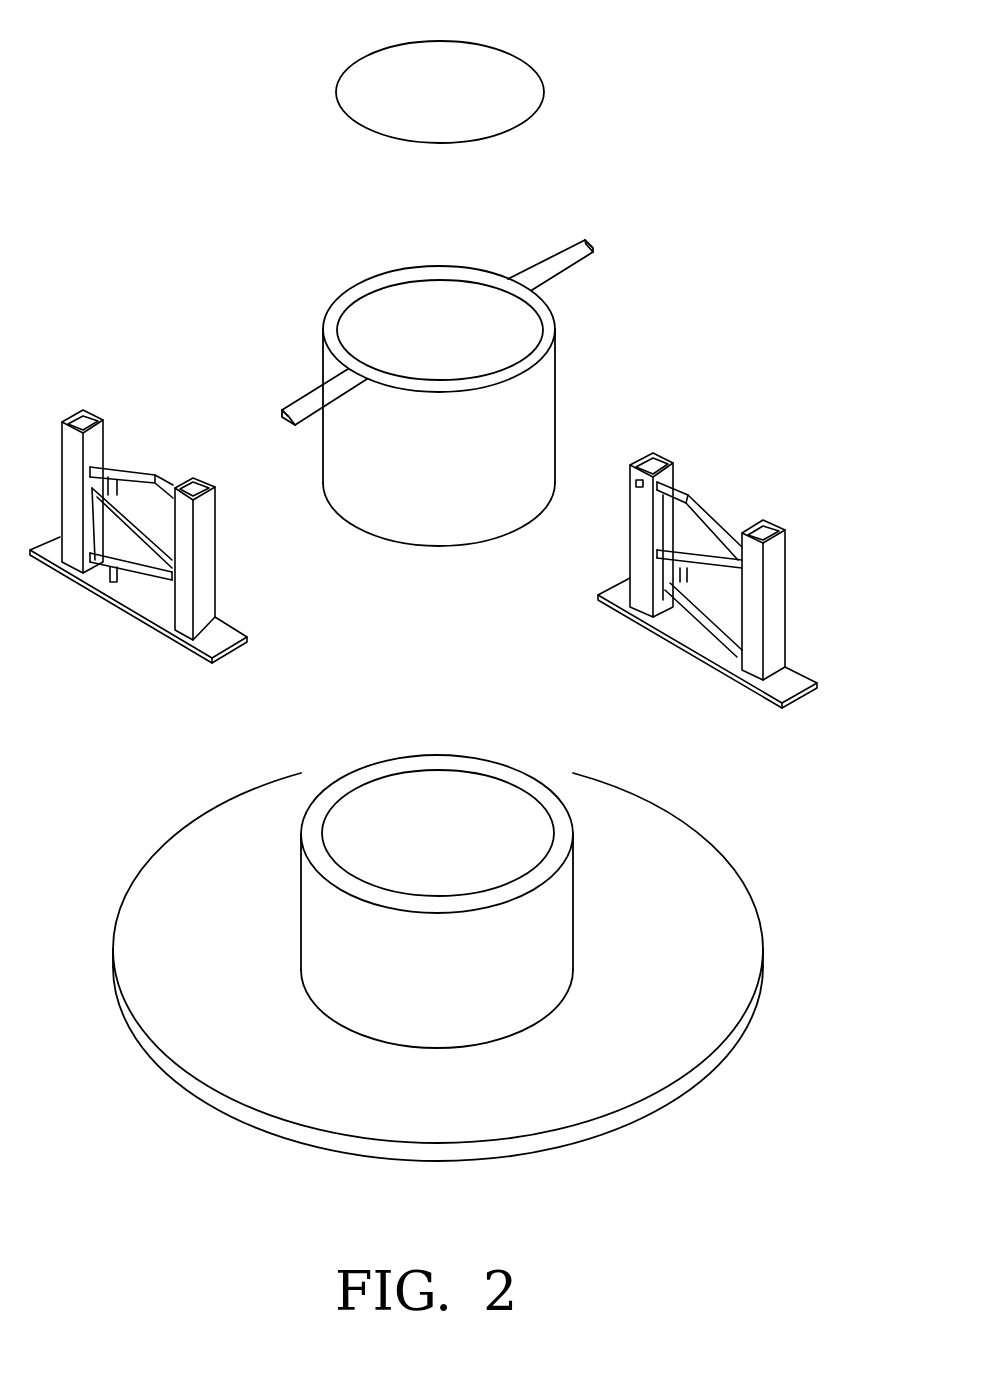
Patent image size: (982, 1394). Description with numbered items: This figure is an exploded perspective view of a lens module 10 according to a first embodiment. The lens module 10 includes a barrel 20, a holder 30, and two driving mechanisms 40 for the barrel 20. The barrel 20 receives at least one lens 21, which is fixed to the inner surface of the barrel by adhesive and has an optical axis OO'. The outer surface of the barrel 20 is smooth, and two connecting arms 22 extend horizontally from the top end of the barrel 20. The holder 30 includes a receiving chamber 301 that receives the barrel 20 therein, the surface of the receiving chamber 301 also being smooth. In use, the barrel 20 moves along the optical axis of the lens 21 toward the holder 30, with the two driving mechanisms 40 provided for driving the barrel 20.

The lens module 10 is at (201, 105).
The barrel 20 is at (543, 425).
The lens 21 is at (511, 88).
The connecting arms 22 is at (560, 258).
The holder 30 is at (711, 923).
The receiving chamber 301 is at (484, 806).
The driving mechanisms 40 is at (778, 587).